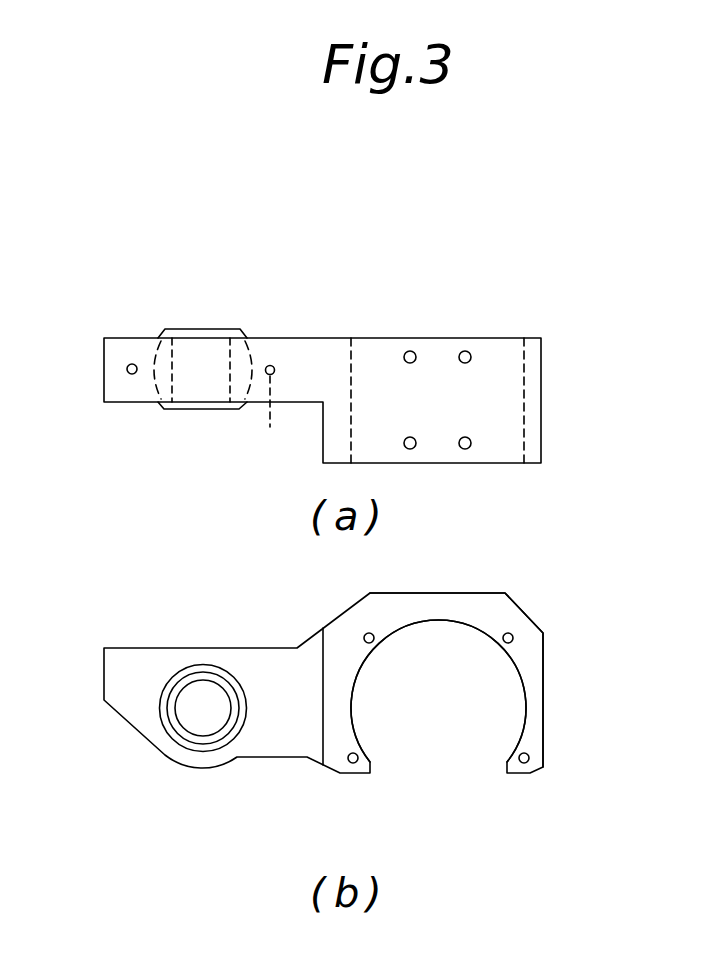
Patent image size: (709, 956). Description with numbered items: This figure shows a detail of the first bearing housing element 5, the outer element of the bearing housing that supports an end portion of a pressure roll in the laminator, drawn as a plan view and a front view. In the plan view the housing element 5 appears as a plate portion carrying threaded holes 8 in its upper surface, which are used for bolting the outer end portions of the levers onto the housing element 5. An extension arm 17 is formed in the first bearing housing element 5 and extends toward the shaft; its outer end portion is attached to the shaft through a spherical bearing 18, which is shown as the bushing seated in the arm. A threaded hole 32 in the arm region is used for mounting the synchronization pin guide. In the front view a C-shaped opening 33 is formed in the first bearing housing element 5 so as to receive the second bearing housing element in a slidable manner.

The first bearing housing element 5 is at (503, 393).
The threaded holes 8 is at (410, 351).
The extension arm 17 is at (295, 387).
The spherical bearing 18 is at (170, 410).
The threaded holes 32 is at (130, 363).
The C-shaped opening 33 is at (415, 733).